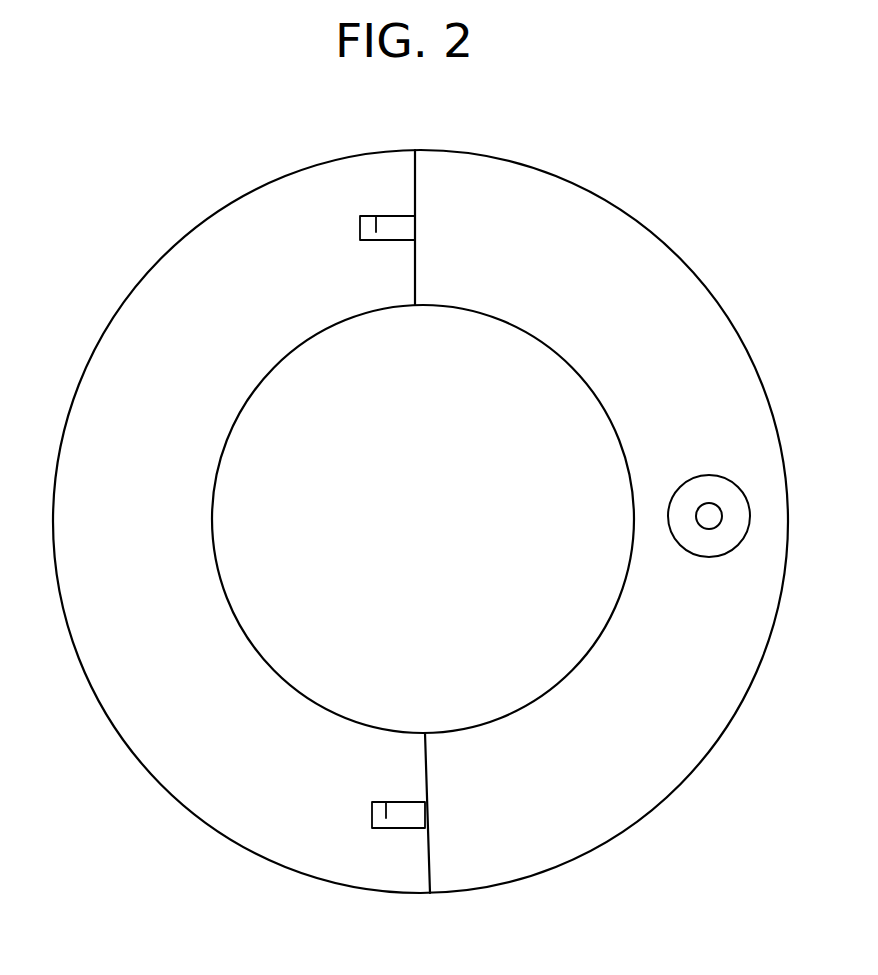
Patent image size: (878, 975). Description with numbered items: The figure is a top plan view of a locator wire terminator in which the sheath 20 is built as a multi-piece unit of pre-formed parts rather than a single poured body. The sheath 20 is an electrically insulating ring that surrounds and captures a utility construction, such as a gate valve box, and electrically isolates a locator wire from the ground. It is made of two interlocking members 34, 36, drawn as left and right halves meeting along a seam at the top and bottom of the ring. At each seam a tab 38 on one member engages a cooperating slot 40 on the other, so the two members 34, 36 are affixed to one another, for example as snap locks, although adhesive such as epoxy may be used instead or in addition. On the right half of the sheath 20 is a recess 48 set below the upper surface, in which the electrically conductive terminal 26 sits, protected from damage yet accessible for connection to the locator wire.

The sheath 20 is at (617, 205).
The interlocking member 34 is at (232, 328).
The interlocking member 36 is at (643, 326).
The tab 38 is at (410, 227).
The slot 40 is at (360, 221).
The recess 48 is at (716, 491).
The terminal 26 is at (723, 514).